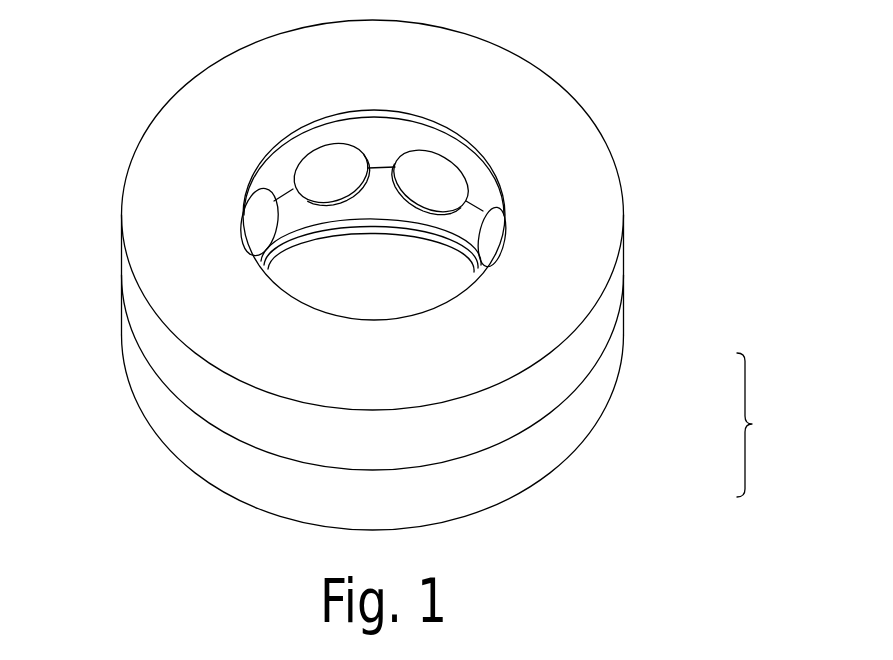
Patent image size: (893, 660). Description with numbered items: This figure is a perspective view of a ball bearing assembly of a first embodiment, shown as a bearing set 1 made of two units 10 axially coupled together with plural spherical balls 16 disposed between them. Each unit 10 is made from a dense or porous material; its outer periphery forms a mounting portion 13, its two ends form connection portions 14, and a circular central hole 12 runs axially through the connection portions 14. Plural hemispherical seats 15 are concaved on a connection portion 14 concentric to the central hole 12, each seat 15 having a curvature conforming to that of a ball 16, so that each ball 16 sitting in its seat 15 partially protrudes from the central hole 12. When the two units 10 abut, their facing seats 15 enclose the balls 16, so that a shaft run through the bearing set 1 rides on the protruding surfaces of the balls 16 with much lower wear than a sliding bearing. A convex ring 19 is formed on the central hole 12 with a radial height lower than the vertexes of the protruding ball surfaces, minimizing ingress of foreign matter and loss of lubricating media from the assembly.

The bearing set 1 is at (752, 425).
The unit 10 is at (600, 341).
The central hole 12 is at (307, 272).
The mounting portion 13 is at (180, 372).
The connection portion 14 is at (562, 152).
The hemispherical seat 15 is at (307, 203).
The spherical ball 16 is at (333, 177).
The convex ring 19 is at (458, 140).